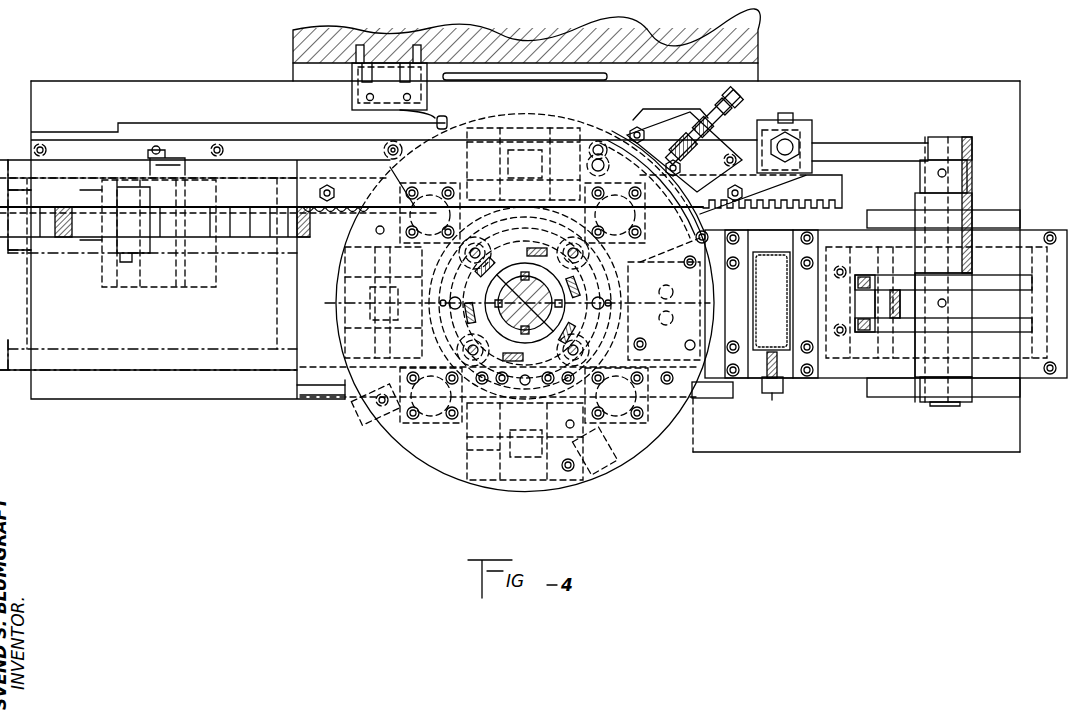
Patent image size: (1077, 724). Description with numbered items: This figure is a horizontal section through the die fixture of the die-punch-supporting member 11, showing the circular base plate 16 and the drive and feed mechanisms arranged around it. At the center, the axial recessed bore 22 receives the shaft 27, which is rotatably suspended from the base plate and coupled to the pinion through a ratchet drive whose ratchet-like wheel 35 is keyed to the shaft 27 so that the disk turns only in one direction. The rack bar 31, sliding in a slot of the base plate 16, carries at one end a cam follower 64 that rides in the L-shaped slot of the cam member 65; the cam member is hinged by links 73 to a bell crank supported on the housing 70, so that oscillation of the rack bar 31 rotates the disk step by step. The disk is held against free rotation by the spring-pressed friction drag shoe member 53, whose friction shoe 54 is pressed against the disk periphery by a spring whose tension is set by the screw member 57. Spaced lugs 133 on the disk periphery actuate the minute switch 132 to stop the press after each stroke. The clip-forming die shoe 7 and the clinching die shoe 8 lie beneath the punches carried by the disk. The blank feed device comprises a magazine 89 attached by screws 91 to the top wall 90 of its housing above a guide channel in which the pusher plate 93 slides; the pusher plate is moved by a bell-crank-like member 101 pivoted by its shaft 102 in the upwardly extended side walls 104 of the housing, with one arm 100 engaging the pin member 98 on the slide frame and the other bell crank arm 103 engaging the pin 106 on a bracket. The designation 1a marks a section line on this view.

The minute switch 132 is at (430, 96).
The clinching die shoe 8 is at (466, 479).
The spring-pressed friction drag shoe member 53 is at (669, 110).
The screw member 57 is at (726, 96).
The pin 106 is at (815, 124).
The bell crank arm 103 is at (870, 152).
The shaft 102 is at (952, 140).
The side walls 104 is at (1000, 214).
The die-punch-supporting member 11 is at (390, 167).
The friction shoe 54 is at (643, 250).
The rack bar 31 is at (846, 196).
The bell-crank-like member 101 is at (975, 257).
The links 73 is at (70, 257).
The cam follower 64 is at (191, 237).
The cam member 65 is at (257, 240).
The ratchet-like wheel 35 is at (525, 276).
The shaft 27 is at (500, 293).
The axial recessed bore 22 is at (563, 317).
The clip-forming die shoe 7 is at (720, 290).
The section line 1a is at (325, 290).
The pin member 98 is at (870, 302).
The arm 100 is at (1003, 288).
The pusher plate 93 is at (868, 312).
The lugs 133 is at (350, 384).
The base plate 16 is at (368, 410).
The magazine 89 is at (760, 358).
The top wall 90 is at (790, 378).
The screws 91 is at (812, 364).
The housing 70 is at (126, 374).